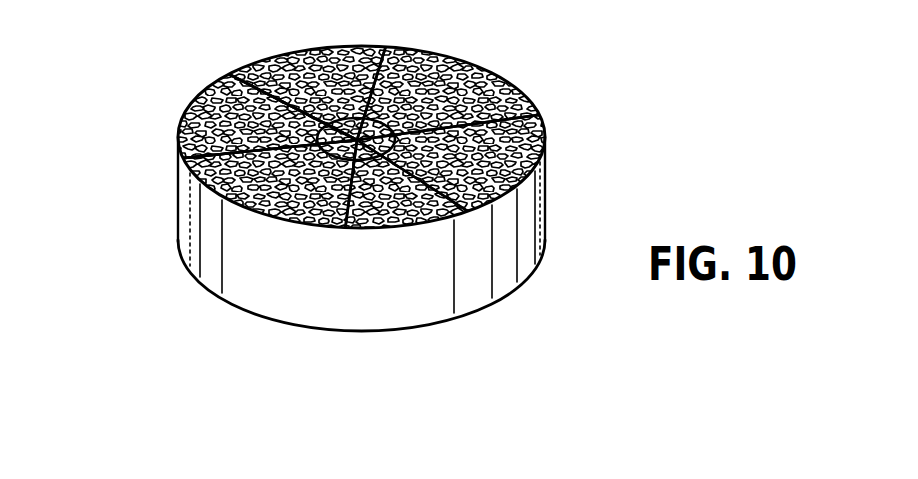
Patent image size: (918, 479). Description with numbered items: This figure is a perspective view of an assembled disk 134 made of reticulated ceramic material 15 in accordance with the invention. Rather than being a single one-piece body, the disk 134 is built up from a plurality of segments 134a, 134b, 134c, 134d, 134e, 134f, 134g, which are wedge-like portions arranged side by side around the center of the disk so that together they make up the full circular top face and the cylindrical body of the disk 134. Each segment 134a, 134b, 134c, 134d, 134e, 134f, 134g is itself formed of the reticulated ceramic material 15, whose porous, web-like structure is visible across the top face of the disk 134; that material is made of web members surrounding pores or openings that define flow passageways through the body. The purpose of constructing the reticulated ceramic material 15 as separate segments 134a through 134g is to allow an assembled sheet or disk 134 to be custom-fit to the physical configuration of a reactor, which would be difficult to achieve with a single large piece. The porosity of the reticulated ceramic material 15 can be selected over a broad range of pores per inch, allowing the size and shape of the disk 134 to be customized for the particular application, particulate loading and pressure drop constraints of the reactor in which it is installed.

The disk 134 is at (344, 323).
The reticulated ceramic material 15 is at (503, 80).
The segment 134a is at (328, 74).
The segment 134b is at (407, 93).
The segment 134c is at (487, 149).
The segment 134d is at (427, 197).
The segment 134e is at (288, 187).
The segment 134f is at (220, 108).
The segment 134g is at (183, 131).